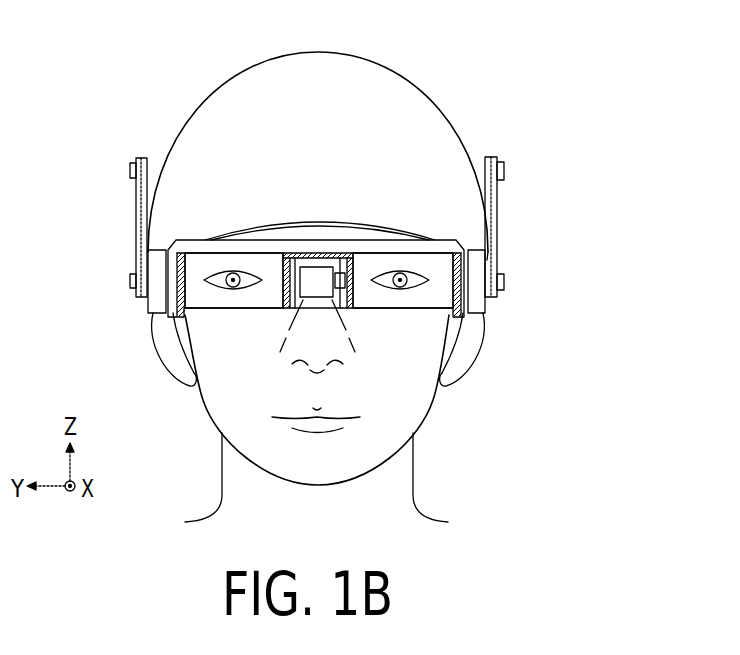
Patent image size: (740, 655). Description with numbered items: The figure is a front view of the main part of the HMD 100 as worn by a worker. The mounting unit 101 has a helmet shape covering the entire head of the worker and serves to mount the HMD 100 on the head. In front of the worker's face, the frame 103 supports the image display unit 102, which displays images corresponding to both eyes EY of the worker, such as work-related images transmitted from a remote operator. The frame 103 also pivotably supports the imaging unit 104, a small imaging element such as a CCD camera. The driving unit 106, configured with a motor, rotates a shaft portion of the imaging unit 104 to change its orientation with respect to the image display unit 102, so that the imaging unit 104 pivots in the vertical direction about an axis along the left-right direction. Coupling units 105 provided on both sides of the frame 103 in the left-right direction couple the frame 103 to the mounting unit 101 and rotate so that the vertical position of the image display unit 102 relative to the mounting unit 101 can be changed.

The HMD 100 is at (447, 89).
The mounting unit 101 is at (448, 125).
The image display unit 102 is at (205, 262).
The frame 103 is at (153, 303).
The imaging unit 104 is at (312, 267).
The coupling unit 105 is at (136, 228).
The driving unit 106 is at (341, 273).
The eyes EY is at (228, 268).